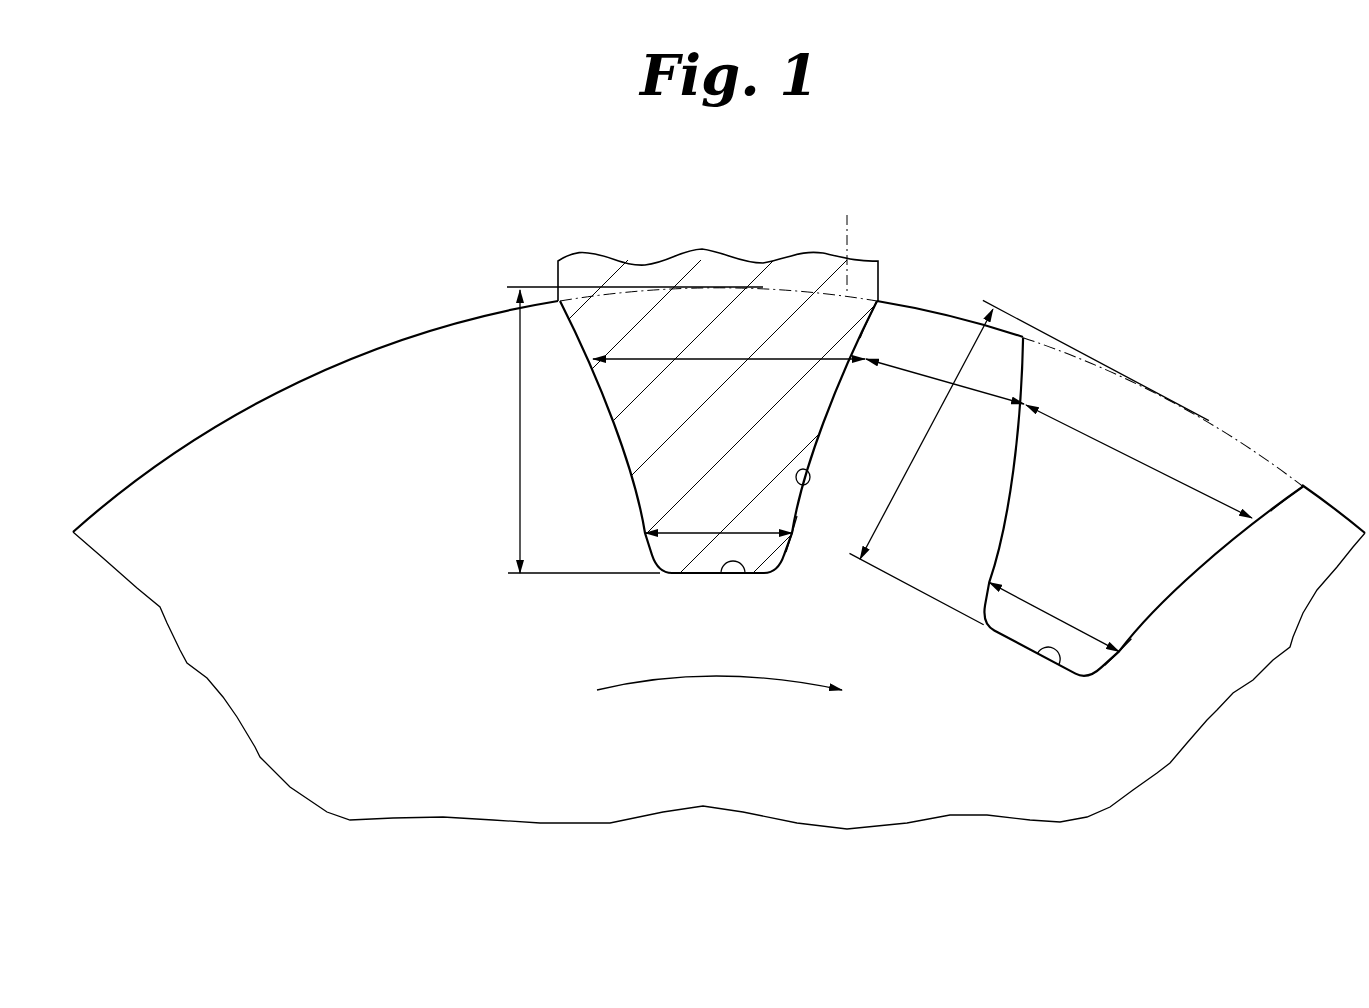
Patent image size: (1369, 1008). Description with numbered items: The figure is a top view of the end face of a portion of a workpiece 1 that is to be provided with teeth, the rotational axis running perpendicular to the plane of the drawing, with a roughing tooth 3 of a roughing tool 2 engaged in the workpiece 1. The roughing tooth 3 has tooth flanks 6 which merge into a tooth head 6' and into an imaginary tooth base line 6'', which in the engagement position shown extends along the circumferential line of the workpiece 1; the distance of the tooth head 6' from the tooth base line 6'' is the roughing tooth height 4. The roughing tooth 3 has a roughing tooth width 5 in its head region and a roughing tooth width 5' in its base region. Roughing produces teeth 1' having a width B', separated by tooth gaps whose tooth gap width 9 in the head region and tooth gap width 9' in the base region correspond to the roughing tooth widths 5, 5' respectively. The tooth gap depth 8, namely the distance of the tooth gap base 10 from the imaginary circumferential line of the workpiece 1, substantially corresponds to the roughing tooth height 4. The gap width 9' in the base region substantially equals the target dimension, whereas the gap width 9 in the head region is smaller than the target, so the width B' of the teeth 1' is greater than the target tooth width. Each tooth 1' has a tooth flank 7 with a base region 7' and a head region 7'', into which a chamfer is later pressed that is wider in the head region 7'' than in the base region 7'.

The workpiece 1 is at (719, 488).
The teeth 1' is at (934, 346).
The roughing tool 2 is at (708, 262).
The roughing tooth 3 is at (778, 312).
The roughing tooth height 4 is at (630, 430).
The roughing tooth width in head region 5 is at (729, 342).
The roughing tooth width in base region 5' is at (718, 517).
The tooth flank 6 is at (827, 475).
The tooth head 6' is at (747, 616).
The tooth base line 6'' is at (854, 237).
The tooth flank 7 is at (931, 514).
The base region of flank 7' is at (988, 591).
The head region of flank 7'' is at (1087, 432).
The tooth gap depth 8 is at (945, 399).
The tooth gap width in head region 9 is at (1139, 461).
The tooth gap width in base region 9' is at (1054, 616).
The tooth gap base 10 is at (1061, 656).
The tooth width B' is at (1029, 486).